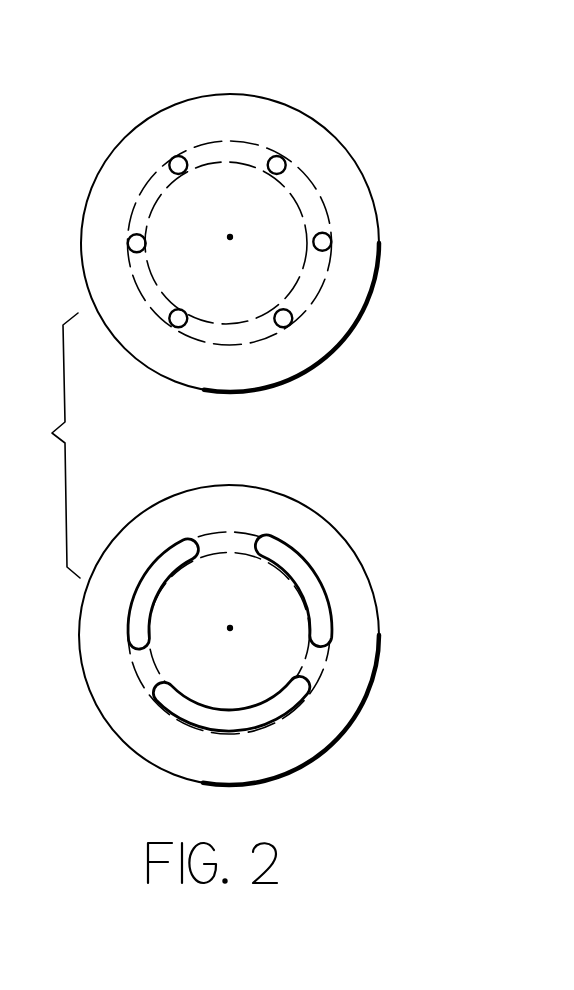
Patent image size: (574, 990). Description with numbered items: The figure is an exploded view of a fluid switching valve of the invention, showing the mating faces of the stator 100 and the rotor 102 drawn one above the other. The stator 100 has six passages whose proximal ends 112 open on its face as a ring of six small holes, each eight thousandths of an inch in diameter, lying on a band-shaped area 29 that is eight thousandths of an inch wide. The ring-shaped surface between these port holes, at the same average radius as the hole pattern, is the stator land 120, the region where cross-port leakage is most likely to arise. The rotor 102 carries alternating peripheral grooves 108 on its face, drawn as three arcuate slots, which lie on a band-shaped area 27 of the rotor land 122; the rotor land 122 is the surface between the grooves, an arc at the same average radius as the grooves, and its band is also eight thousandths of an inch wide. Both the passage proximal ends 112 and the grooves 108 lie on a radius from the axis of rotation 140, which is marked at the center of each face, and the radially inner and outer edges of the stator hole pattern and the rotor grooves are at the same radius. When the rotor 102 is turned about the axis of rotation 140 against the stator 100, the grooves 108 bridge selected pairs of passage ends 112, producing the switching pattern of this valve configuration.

The stator 100 is at (136, 124).
The rotor 102 is at (148, 508).
The land of the stator 120 is at (206, 140).
The land of the rotor 122 is at (210, 530).
The stator passage proximal ends 112 is at (278, 163).
The rotor grooves 108 is at (310, 560).
The band-shaped area of the stator 29 is at (305, 193).
The band-shaped area of the rotor land 27 is at (310, 663).
The axis of rotation 140 is at (230, 237).